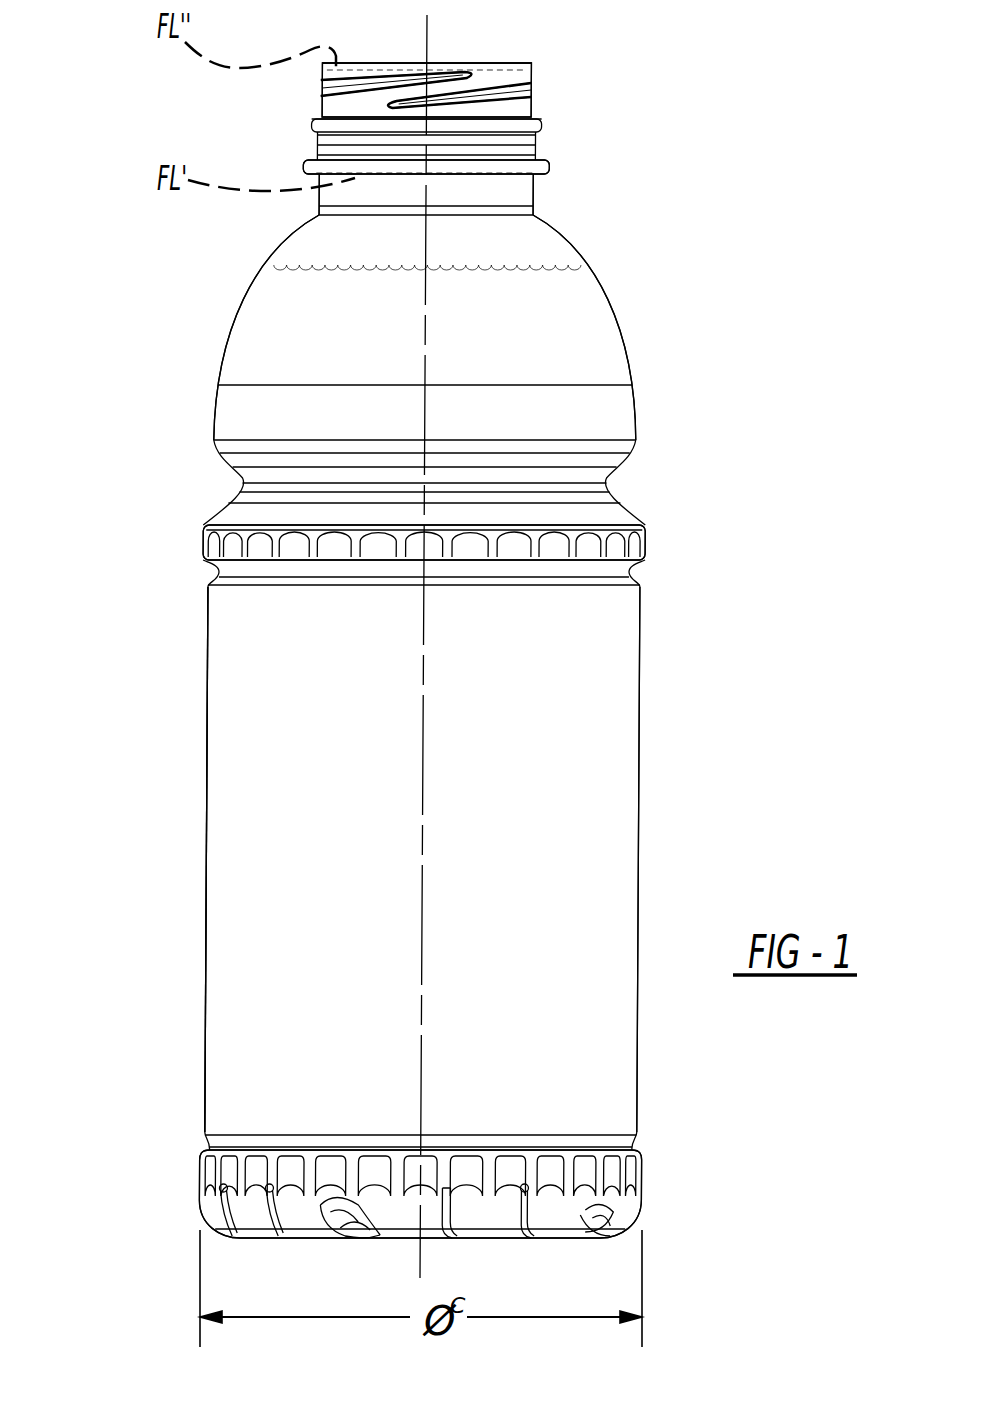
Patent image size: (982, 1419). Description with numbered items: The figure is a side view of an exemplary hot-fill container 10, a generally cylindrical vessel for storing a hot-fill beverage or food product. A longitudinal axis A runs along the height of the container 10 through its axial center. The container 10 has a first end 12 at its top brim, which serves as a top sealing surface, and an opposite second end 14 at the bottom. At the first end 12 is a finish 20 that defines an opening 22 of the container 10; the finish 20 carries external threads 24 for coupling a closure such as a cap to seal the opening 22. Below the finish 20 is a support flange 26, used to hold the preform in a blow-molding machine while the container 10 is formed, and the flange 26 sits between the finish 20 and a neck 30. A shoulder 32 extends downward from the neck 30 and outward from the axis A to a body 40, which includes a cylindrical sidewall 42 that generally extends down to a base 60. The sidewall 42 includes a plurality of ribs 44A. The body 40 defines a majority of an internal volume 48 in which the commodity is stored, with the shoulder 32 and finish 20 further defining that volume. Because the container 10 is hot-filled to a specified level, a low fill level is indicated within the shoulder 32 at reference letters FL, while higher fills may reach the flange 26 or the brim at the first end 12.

The container 10 is at (112, 135).
The first end 12 is at (507, 62).
The second end 14 is at (490, 1237).
The finish 20 is at (535, 73).
The opening 22 is at (473, 62).
The threads 24 is at (322, 86).
The support flange 26 is at (548, 170).
The neck 30 is at (535, 192).
The shoulder 32 is at (620, 332).
The body 40 is at (640, 765).
The cylindrical sidewall 42 is at (207, 895).
The ribs 44A is at (607, 481).
The internal volume 48 is at (360, 772).
The base 60 is at (395, 1240).
The longitudinal axis A is at (426, 37).
The fill level FL is at (275, 262).